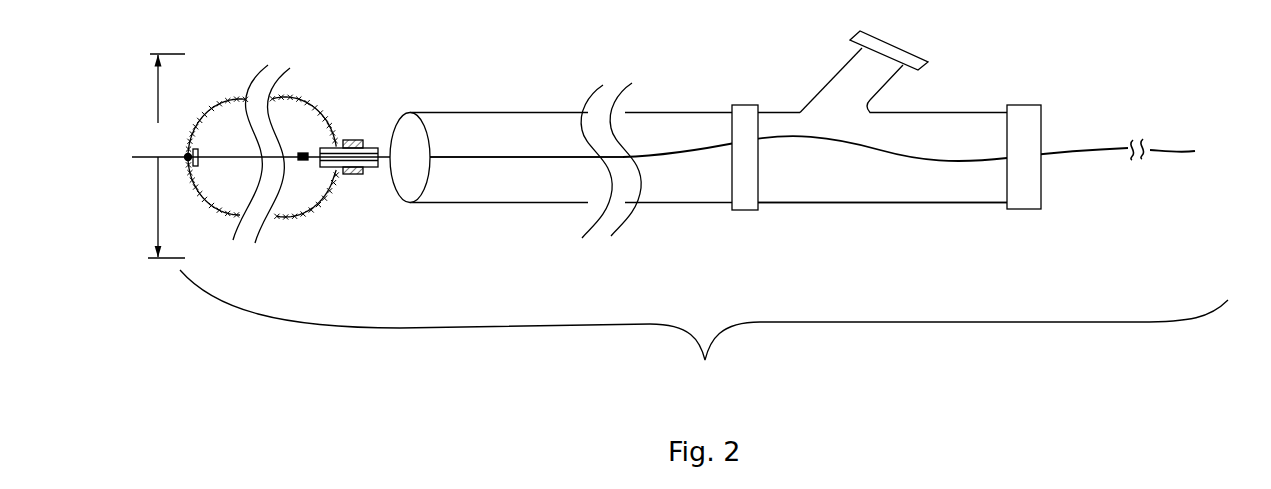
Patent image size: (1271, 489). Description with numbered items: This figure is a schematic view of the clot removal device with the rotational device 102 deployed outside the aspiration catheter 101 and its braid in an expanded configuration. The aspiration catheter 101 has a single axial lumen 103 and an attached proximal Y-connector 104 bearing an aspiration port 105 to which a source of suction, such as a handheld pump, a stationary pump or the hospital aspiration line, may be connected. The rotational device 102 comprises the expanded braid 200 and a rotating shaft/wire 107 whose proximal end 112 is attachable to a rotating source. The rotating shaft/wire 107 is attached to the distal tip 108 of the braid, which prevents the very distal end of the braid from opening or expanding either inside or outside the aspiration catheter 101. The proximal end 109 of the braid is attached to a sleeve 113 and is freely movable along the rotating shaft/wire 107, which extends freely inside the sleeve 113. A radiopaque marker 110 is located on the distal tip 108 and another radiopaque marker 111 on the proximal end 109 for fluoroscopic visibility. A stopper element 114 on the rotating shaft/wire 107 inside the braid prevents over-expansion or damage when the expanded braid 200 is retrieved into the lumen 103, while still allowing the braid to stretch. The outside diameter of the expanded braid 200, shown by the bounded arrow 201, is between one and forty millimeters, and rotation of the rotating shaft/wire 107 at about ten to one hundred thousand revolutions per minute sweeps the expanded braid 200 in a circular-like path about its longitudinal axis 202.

The aspiration catheter 101 is at (725, 142).
The rotational device 102 is at (704, 328).
The single axial lumen 103 is at (497, 136).
The proximal Y-connector 104 is at (882, 250).
The aspiration port 105 is at (910, 72).
The rotating shaft/wire 107 is at (686, 193).
The distal tip 108 is at (171, 89).
The proximal end of the expandable braid 109 is at (359, 210).
The radiopaque marker 110 is at (220, 99).
The radiopaque marker 111 is at (353, 101).
The proximal end 112 is at (1179, 119).
The sleeve 113 is at (387, 205).
The stopper element 114 is at (283, 214).
The expanded braid 200 is at (310, 124).
The bounded arrow 201 is at (137, 210).
The longitudinal axis 202 is at (134, 101).